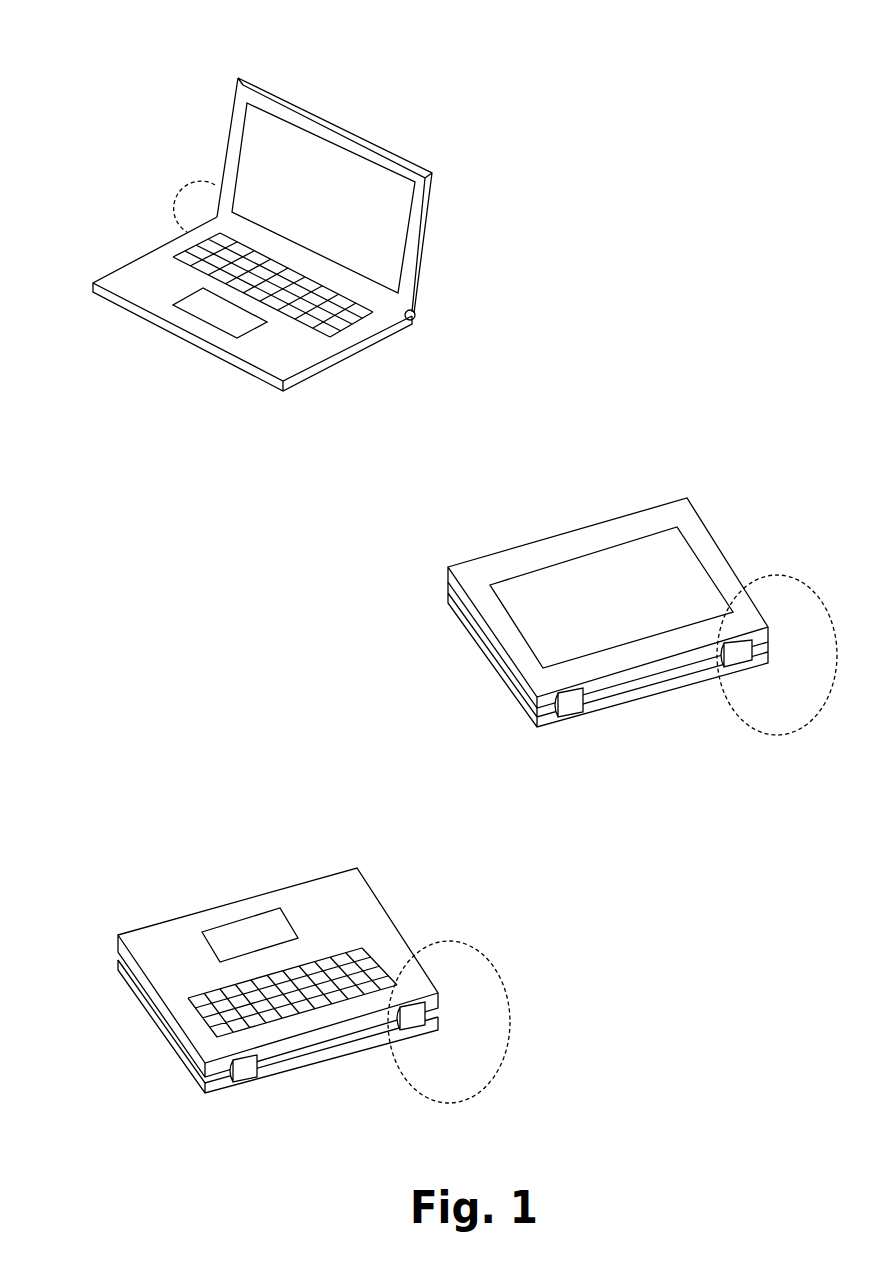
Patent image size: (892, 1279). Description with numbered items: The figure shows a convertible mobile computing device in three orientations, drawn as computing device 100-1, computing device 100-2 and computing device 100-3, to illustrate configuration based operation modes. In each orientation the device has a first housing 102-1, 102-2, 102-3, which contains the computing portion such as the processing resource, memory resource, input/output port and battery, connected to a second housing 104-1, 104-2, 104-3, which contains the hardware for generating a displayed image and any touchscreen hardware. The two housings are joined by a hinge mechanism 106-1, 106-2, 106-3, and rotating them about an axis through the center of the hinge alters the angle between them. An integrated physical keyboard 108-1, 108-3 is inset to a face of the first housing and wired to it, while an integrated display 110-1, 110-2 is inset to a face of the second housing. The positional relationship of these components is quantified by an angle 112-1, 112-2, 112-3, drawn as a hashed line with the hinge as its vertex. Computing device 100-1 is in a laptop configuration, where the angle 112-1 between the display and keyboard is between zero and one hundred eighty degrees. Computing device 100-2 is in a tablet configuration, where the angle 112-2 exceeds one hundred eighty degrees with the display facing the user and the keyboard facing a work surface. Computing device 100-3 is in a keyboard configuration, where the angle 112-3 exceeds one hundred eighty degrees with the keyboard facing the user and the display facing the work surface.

The computing device 100-1 is at (238, 78).
The first housing 102-1 is at (112, 300).
The second housing 104-1 is at (337, 127).
The hinge mechanism 106-1 is at (417, 315).
The integrated physical keyboard 108-1 is at (177, 248).
The integrated display 110-1 is at (287, 102).
The angle 112-1 is at (187, 195).
The computing device 100-2 is at (693, 497).
The first housing 102-2 is at (458, 608).
The second housing 104-2 is at (448, 580).
The hinge mechanism 106-2 is at (578, 718).
The integrated display 110-2 is at (687, 528).
The angle 112-2 is at (783, 735).
The computing device 100-3 is at (118, 930).
The first housing 102-3 is at (118, 948).
The second housing 104-3 is at (128, 975).
The hinge mechanism 106-3 is at (250, 1080).
The integrated physical keyboard 108-3 is at (190, 1010).
The angle 112-3 is at (500, 1060).